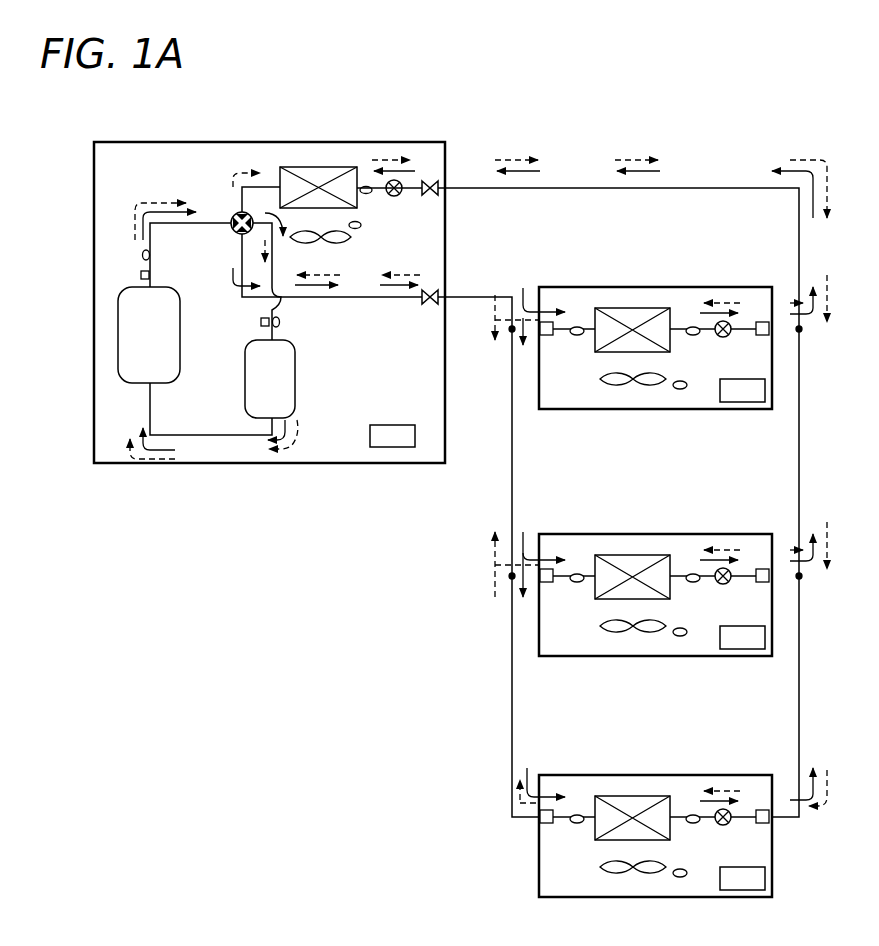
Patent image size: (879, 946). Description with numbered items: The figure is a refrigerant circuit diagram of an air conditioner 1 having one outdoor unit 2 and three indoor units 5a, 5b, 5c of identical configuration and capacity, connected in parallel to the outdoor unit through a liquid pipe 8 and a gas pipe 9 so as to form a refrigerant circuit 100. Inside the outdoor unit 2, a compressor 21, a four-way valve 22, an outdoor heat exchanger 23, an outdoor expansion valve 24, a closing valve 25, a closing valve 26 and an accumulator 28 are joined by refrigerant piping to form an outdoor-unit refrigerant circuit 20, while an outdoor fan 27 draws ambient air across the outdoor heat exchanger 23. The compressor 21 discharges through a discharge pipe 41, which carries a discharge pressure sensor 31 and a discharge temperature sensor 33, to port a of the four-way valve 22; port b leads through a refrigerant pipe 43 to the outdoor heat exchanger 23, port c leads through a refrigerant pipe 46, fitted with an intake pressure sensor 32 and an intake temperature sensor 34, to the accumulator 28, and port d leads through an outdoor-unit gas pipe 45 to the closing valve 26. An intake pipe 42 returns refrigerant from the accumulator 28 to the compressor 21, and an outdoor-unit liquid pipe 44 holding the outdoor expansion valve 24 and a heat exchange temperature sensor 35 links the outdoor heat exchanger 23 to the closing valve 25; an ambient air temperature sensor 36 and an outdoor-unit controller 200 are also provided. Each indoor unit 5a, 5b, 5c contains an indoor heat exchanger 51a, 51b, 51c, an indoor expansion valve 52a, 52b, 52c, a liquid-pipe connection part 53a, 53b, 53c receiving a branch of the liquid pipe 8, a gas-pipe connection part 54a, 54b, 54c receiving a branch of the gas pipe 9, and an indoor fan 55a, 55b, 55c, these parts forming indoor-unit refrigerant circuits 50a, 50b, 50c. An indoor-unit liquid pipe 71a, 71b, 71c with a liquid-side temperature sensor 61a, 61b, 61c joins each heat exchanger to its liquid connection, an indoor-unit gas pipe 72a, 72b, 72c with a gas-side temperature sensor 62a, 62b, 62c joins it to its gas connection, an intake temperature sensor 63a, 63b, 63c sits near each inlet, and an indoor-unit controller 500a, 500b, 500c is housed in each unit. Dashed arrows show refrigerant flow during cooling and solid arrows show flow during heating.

The air conditioner 1 is at (742, 112).
The outdoor unit 2 is at (134, 142).
The liquid pipe 8 is at (598, 186).
The gas pipe 9 is at (497, 520).
The outdoor-unit refrigerant circuit 20 is at (318, 338).
The compressor 21 is at (117, 320).
The four-way valve 22 is at (238, 212).
The outdoor heat exchanger 23 is at (330, 167).
The outdoor expansion valve 24 is at (394, 180).
The closing valve 25 is at (440, 185).
The closing valve 26 is at (438, 295).
The outdoor fan 27 is at (333, 241).
The accumulator 28 is at (285, 419).
The discharge pressure sensor 31 is at (141, 275).
The intake pressure sensor 32 is at (261, 323).
The discharge temperature sensor 33 is at (141, 255).
The intake temperature sensor 34 is at (279, 323).
The heat exchange temperature sensor 35 is at (366, 186).
The ambient air temperature sensor 36 is at (362, 227).
The discharge pipe 41 is at (195, 222).
The intake pipe 42 is at (205, 436).
The refrigerant pipe 43 is at (268, 222).
The outdoor-unit liquid pipe 44 is at (428, 185).
The outdoor-unit gas pipe 45 is at (400, 300).
The refrigerant pipe 46 is at (272, 277).
The refrigerant circuit 100 is at (700, 180).
The outdoor-unit controller 200 is at (390, 425).
The indoor unit 5a is at (563, 288).
The indoor unit 5b is at (563, 535).
The indoor unit 5c is at (563, 776).
The indoor-unit refrigerant circuit 50a is at (708, 340).
The indoor-unit refrigerant circuit 50b is at (708, 587).
The indoor-unit refrigerant circuit 50c is at (708, 828).
The indoor heat exchanger 51a is at (617, 307).
The indoor heat exchanger 51b is at (617, 554).
The indoor heat exchanger 51c is at (617, 795).
The indoor expansion valve 52a is at (722, 321).
The indoor expansion valve 52b is at (722, 568).
The indoor expansion valve 52c is at (722, 809).
The liquid-pipe connection part 53a is at (763, 321).
The liquid-pipe connection part 53b is at (763, 568).
The liquid-pipe connection part 53c is at (763, 809).
The gas-pipe connection part 54a is at (548, 336).
The gas-pipe connection part 54b is at (548, 583).
The gas-pipe connection part 54c is at (548, 824).
The indoor fan 55a is at (613, 385).
The indoor fan 55b is at (613, 632).
The indoor fan 55c is at (613, 873).
The liquid-side temperature sensor 61a is at (694, 337).
The liquid-side temperature sensor 61b is at (694, 584).
The liquid-side temperature sensor 61c is at (694, 825).
The gas-side temperature sensor 62a is at (577, 337).
The gas-side temperature sensor 62b is at (577, 584).
The gas-side temperature sensor 62c is at (577, 825).
The intake temperature sensor 63a is at (681, 390).
The intake temperature sensor 63b is at (681, 637).
The intake temperature sensor 63c is at (681, 878).
The indoor-unit liquid pipe 71a is at (681, 327).
The indoor-unit liquid pipe 71b is at (681, 574).
The indoor-unit liquid pipe 71c is at (681, 815).
The indoor-unit gas pipe 72a is at (586, 327).
The indoor-unit gas pipe 72b is at (586, 574).
The indoor-unit gas pipe 72c is at (586, 815).
The indoor-unit controller 500a is at (747, 403).
The indoor-unit controller 500b is at (747, 650).
The indoor-unit controller 500c is at (747, 891).